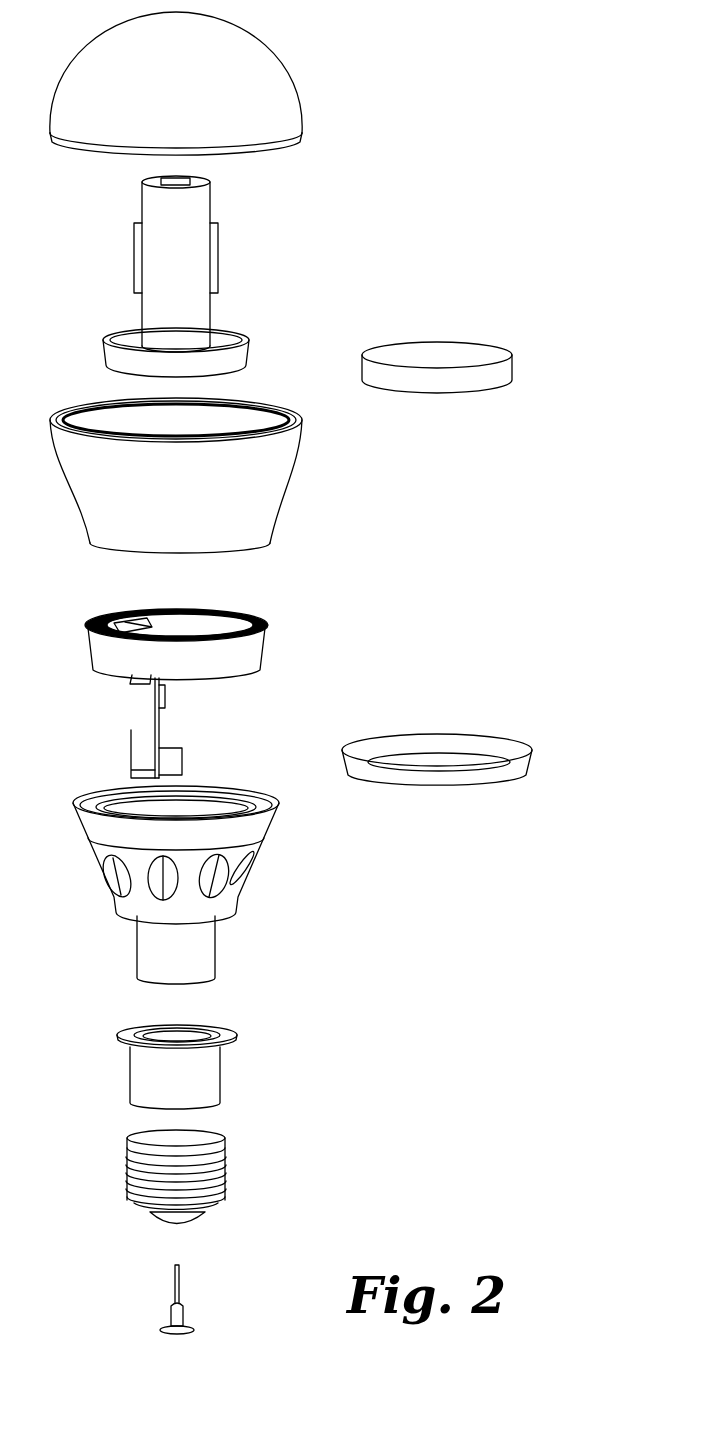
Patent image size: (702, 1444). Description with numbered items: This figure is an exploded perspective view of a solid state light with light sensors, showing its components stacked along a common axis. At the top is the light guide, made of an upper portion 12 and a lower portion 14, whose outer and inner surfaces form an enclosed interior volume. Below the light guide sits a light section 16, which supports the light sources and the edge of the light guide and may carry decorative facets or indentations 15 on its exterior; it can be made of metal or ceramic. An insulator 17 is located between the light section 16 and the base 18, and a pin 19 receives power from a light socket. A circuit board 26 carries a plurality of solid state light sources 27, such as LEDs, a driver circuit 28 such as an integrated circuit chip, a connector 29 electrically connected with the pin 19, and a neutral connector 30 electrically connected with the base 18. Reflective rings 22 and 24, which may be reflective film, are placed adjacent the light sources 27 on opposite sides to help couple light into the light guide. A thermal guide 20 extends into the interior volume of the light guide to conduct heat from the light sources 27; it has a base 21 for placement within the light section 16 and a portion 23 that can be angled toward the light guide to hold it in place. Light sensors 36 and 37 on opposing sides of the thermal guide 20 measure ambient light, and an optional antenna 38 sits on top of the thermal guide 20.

The upper portion of light guide 12 is at (270, 65).
The lower portion of light guide 14 is at (260, 497).
The decorative facets or indentations 15 is at (128, 890).
The light section 16 is at (225, 905).
The insulator 17 is at (207, 1070).
The base 18 is at (222, 1180).
The pin 19 is at (185, 1318).
The thermal guide 20 is at (197, 205).
The base of thermal guide 21 is at (125, 373).
The reflective ring 22 is at (492, 372).
The portion of thermal guide 23 is at (113, 340).
The reflective ring 24 is at (512, 776).
The circuit board 26 is at (276, 650).
The solid state light sources 27 is at (233, 610).
The driver circuit 28 is at (163, 700).
The connector 29 is at (185, 766).
The neutral connector 30 is at (130, 752).
The light sensor 36 is at (218, 250).
The light sensor 37 is at (134, 250).
The antenna 38 is at (168, 179).